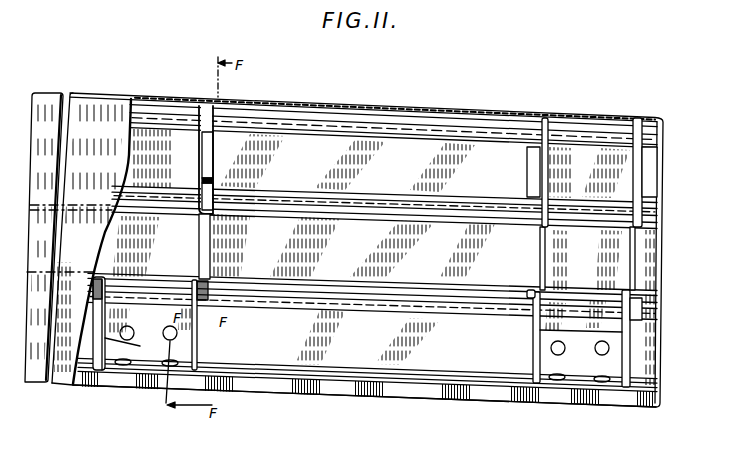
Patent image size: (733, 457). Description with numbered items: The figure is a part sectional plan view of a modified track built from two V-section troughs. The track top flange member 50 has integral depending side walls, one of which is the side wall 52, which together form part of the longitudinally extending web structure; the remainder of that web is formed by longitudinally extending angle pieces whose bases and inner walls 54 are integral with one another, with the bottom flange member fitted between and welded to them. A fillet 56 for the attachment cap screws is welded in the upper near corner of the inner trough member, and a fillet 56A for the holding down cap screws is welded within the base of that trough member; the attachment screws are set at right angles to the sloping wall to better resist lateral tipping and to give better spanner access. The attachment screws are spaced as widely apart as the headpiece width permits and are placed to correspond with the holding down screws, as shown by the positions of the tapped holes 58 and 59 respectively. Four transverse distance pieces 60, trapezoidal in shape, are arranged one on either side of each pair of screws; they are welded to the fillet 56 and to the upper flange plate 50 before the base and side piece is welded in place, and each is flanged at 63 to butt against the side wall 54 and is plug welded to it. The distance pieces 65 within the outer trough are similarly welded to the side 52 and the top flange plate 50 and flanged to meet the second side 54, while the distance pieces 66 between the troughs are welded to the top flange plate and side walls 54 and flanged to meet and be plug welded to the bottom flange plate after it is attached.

The track top flange member 50 is at (33, 368).
The side wall 52 is at (347, 105).
The inner wall 54 is at (427, 227).
The fillet 56 is at (300, 368).
The fillet 56A is at (121, 370).
The tapped holes 58 is at (167, 368).
The tapped holes 59 is at (167, 326).
The transverse distance pieces 60 is at (140, 346).
The flange 63 is at (212, 272).
The distance pieces 65 is at (632, 178).
The distance pieces 66 is at (545, 254).